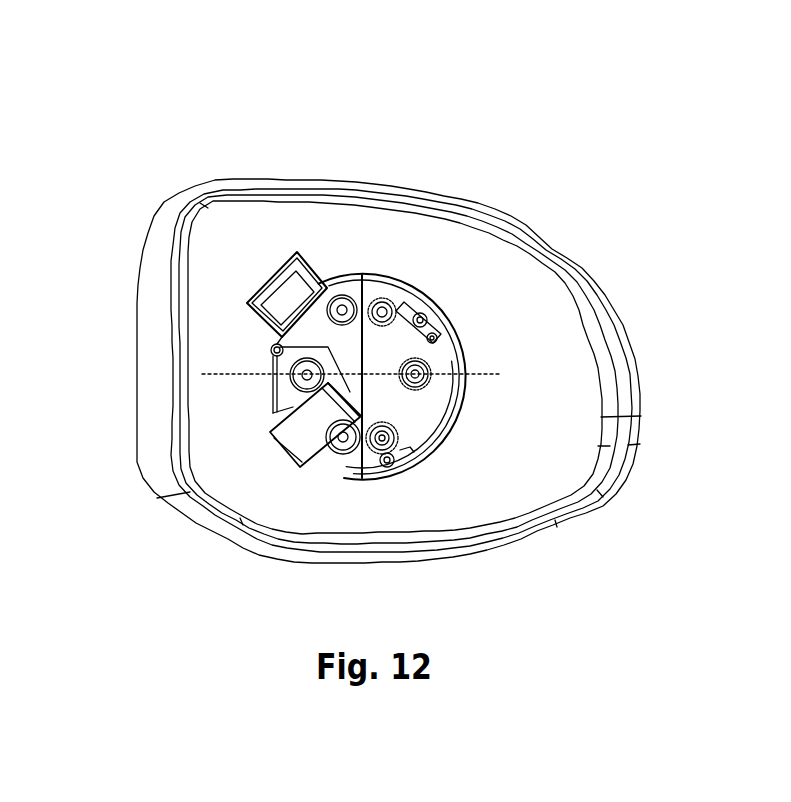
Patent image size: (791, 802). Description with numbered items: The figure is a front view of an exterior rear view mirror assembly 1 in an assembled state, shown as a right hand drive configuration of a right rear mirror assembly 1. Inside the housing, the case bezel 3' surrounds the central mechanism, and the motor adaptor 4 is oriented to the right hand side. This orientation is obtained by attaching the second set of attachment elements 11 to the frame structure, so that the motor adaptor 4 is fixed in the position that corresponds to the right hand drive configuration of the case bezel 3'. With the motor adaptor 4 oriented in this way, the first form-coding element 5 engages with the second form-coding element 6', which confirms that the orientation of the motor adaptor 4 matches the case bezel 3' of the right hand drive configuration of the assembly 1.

The exterior rear view mirror assembly 1 is at (112, 109).
The case bezel 3' is at (351, 371).
The motor adaptor 4 is at (363, 336).
The first form-coding element 5 is at (283, 262).
The second form-coding element 6' is at (296, 224).
The second set of attachment elements 11 is at (395, 425).